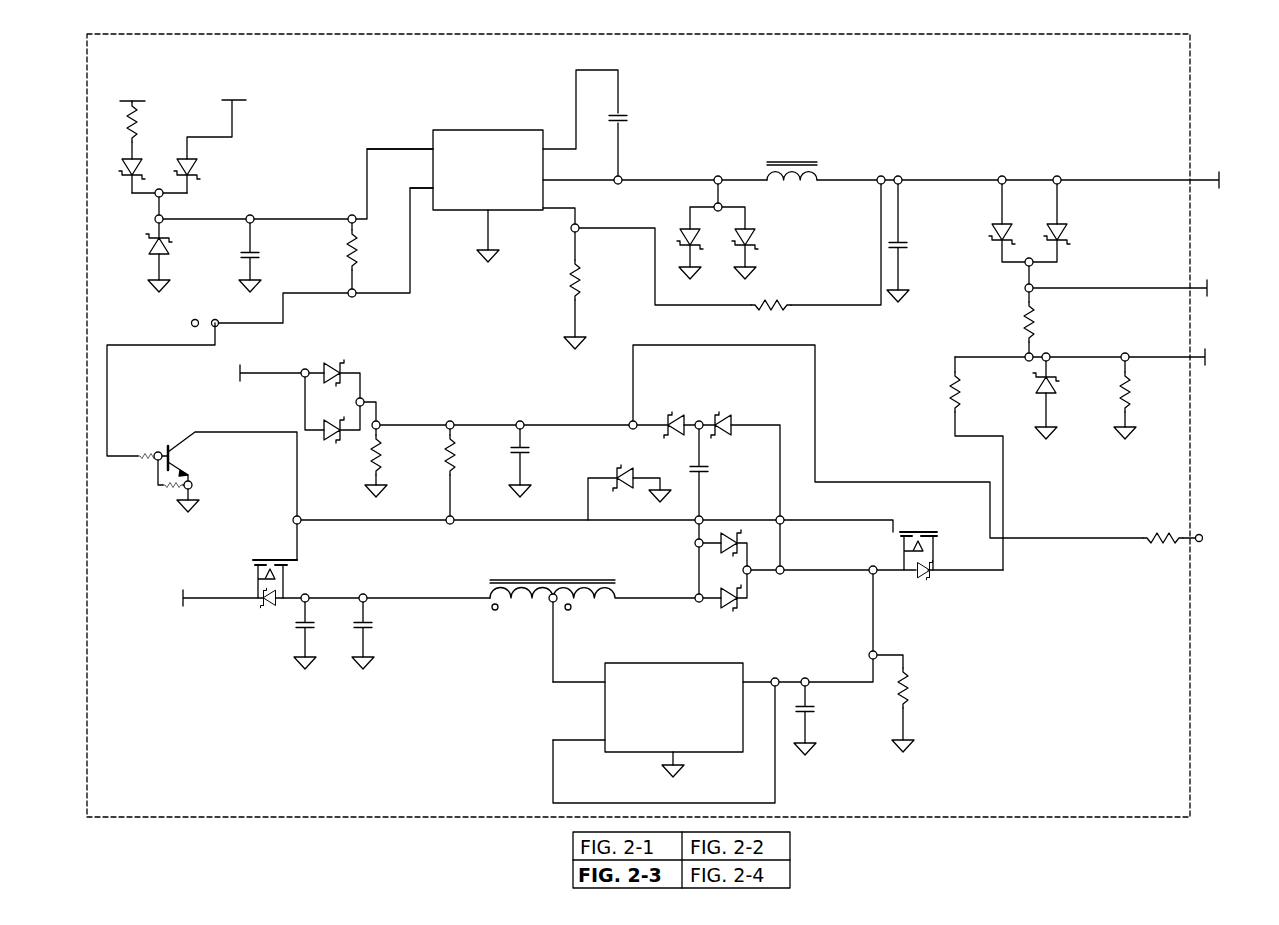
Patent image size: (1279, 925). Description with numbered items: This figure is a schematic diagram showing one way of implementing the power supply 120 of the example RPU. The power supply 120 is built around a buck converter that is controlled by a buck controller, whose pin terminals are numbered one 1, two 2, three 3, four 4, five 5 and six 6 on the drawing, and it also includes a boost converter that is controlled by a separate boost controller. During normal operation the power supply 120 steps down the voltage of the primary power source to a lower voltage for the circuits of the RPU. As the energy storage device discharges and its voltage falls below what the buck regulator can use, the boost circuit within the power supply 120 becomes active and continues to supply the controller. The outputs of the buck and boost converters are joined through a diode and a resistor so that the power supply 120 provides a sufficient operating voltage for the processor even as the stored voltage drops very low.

The power supply 120 is at (1190, 90).
The pin 1 is at (580, 405).
The pin 2 is at (622, 446).
The pin 3 is at (559, 206).
The pin 4 is at (421, 176).
The pin 5 is at (486, 403).
The pin 6 is at (580, 168).